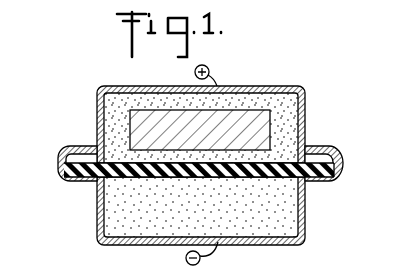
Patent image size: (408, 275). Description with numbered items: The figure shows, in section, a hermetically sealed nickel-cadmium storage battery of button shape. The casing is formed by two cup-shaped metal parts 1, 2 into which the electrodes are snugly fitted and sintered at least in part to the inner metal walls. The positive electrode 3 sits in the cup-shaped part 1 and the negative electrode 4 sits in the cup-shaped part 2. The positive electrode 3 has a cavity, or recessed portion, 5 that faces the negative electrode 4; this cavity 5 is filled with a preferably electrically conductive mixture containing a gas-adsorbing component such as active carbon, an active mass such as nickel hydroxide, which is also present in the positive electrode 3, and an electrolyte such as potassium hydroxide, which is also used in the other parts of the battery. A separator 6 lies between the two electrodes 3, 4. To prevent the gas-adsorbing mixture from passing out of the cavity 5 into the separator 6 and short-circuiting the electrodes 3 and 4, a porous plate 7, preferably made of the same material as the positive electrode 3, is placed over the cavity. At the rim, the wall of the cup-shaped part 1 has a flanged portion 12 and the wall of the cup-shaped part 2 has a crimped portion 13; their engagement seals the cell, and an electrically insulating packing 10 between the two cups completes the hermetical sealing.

The cup-shaped part 1 is at (217, 164).
The cup-shaped part 2 is at (237, 245).
The positive electrode 3 is at (272, 103).
The negative electrode 4 is at (157, 225).
The cavity 5 is at (233, 117).
The separator 6 is at (157, 177).
The porous plate 7 is at (217, 172).
The electrically insulating packing 10 is at (87, 176).
The flanged portion 12 is at (92, 146).
The crimped portion 13 is at (60, 158).